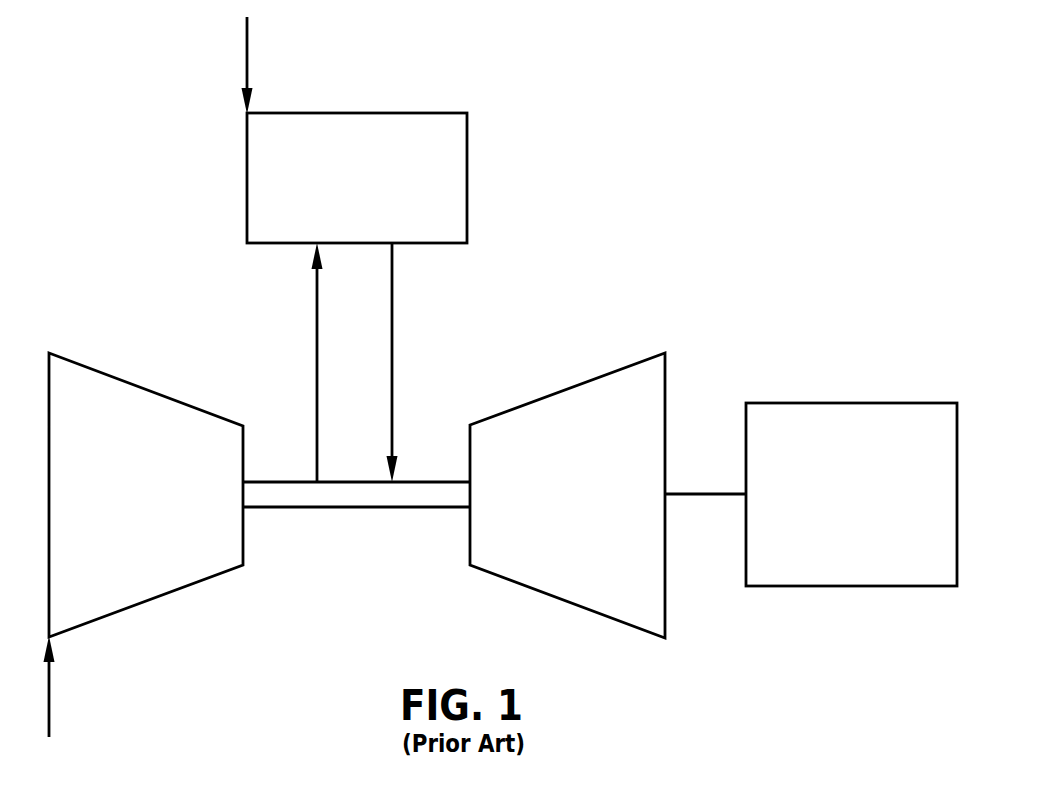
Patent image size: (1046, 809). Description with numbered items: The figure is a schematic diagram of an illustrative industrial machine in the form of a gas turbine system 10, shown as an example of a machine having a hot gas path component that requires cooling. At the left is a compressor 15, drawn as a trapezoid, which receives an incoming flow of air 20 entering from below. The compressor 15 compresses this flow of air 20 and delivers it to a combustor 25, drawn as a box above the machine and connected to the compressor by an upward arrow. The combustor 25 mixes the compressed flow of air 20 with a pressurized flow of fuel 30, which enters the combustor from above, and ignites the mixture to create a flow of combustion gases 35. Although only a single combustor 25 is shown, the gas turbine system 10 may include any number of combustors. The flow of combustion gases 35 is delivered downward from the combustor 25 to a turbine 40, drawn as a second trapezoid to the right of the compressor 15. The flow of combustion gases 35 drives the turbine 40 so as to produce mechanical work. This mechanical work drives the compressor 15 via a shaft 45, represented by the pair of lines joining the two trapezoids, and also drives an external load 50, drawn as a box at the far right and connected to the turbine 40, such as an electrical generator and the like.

The gas turbine system 10 is at (168, 243).
The compressor 15 is at (153, 510).
The flow of air 20 is at (49, 703).
The combustor 25 is at (365, 194).
The flow of fuel 30 is at (247, 57).
The flow of combustion gases 35 is at (392, 415).
The turbine 40 is at (578, 505).
The shaft 45 is at (702, 495).
The external load 50 is at (871, 503).